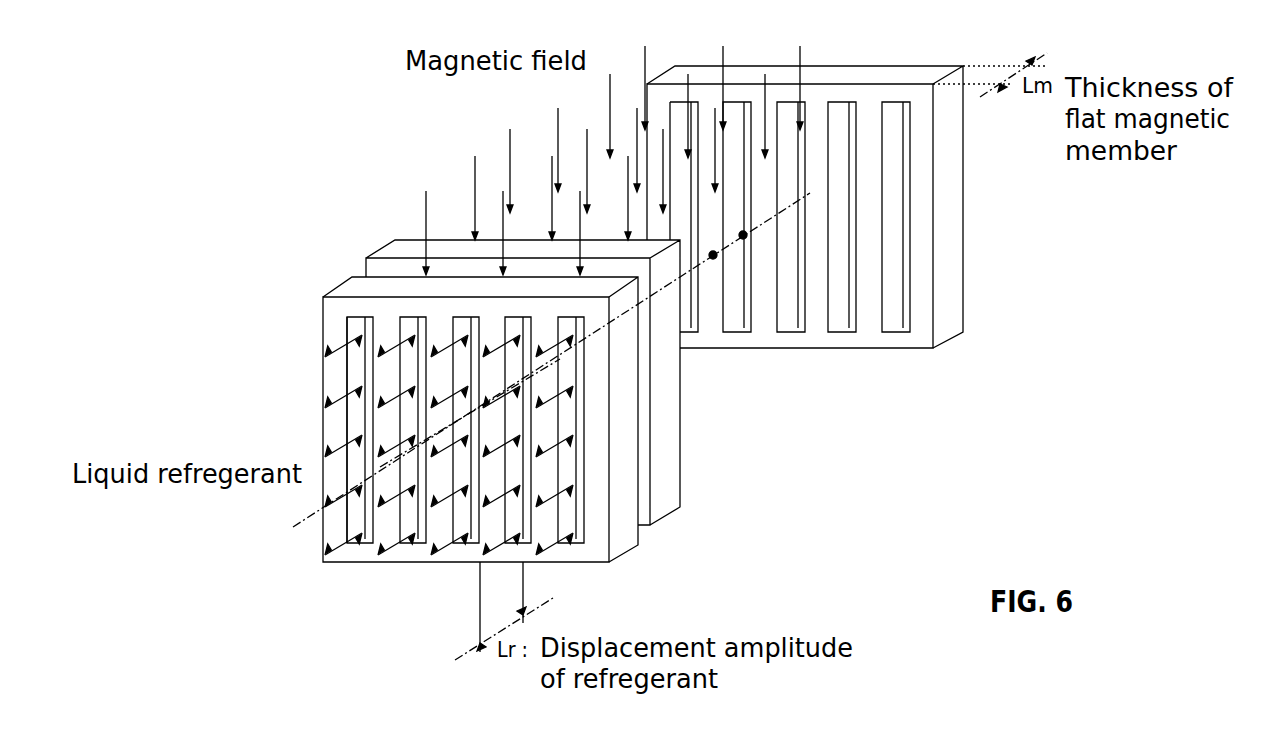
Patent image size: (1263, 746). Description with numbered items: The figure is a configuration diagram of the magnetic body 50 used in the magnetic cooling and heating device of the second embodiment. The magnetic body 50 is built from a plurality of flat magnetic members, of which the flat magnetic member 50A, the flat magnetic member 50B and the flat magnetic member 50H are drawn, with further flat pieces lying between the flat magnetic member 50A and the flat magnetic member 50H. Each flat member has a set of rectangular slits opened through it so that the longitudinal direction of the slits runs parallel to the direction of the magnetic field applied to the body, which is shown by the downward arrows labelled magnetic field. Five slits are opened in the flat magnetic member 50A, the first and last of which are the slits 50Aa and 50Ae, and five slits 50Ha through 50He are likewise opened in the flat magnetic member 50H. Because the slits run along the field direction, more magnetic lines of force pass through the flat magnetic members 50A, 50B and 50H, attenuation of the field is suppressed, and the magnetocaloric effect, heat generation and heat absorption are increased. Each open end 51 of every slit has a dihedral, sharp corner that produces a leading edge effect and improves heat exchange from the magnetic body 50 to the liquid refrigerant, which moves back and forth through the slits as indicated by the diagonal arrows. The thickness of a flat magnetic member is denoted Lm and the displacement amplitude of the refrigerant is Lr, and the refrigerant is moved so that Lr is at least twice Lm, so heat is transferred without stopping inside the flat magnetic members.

The magnetic body 50 is at (307, 62).
The flat magnetic member 50A is at (633, 533).
The flat magnetic member 50B is at (672, 397).
The flat magnetic member 50H is at (963, 258).
The open end 51 is at (347, 323).
The slit 50Aa is at (357, 378).
The slit 50Ae is at (577, 507).
The slit 50Ha is at (680, 104).
The slit 50He is at (887, 104).